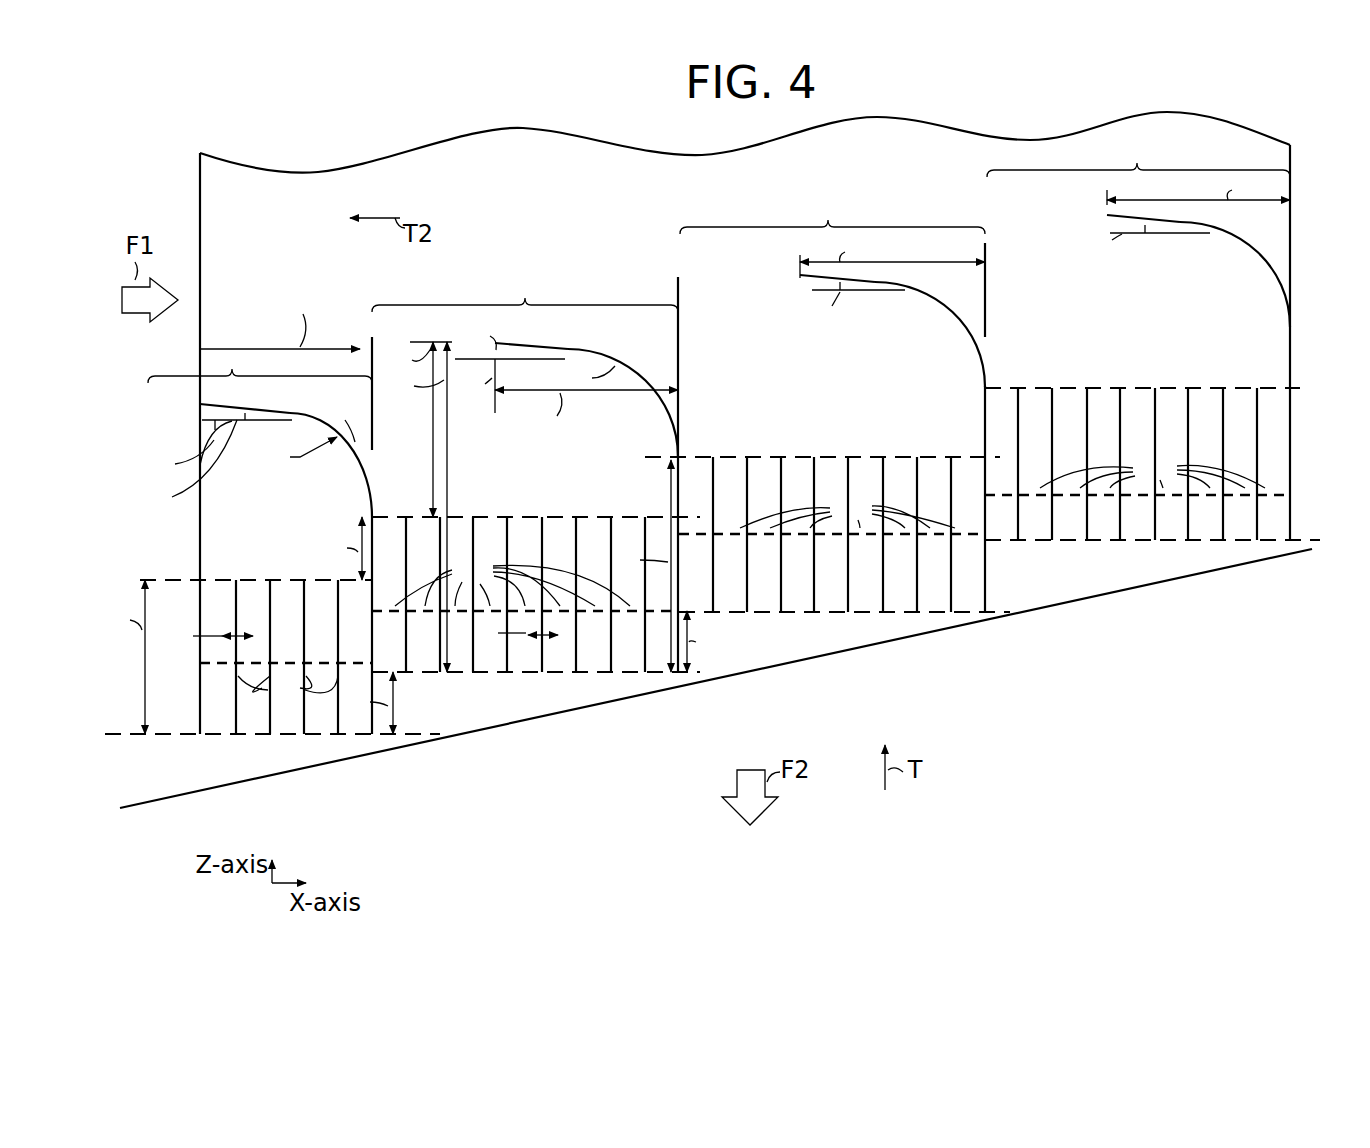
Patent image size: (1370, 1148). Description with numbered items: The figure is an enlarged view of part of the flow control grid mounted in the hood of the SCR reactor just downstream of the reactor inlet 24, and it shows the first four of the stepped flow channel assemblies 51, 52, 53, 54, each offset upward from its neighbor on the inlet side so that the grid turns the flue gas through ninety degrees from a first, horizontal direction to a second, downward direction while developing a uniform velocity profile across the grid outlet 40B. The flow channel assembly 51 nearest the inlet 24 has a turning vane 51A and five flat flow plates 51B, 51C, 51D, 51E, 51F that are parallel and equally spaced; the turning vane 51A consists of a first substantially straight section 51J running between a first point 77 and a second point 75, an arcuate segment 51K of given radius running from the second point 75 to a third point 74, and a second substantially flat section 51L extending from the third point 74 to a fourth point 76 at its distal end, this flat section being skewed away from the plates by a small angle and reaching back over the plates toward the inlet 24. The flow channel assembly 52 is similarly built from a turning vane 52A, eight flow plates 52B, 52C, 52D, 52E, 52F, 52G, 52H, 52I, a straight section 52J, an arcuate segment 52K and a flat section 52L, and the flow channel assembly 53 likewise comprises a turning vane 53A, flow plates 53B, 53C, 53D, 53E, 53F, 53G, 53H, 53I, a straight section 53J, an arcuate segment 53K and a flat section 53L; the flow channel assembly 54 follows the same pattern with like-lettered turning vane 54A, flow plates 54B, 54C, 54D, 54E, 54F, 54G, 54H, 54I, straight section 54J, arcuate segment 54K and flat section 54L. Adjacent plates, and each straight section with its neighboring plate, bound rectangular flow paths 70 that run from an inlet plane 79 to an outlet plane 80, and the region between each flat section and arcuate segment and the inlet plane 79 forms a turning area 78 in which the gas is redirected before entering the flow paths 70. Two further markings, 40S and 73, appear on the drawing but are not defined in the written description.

The inlet 24 is at (190, 166).
The surface 40S is at (190, 712).
The outlet 40B is at (550, 808).
The flow channel assembly 51 is at (232, 371).
The turning vane 51A is at (376, 470).
The flow plate 51B is at (338, 740).
The flow plate 51C is at (304, 740).
The flow plate 51D is at (272, 740).
The flow plate 51E is at (240, 740).
The flow plate 51F is at (205, 740).
The first substantially straight section 51J is at (376, 700).
The arcuate segment 51K is at (374, 438).
The second substantially flat section 51L is at (235, 406).
The flow channel assembly 52 is at (525, 299).
The turning vane 52A is at (681, 420).
The flow plate 52B is at (646, 676).
The flow plate 52C is at (612, 676).
The flow plate 52D is at (577, 676).
The flow plate 52E is at (543, 676).
The flow plate 52F is at (508, 676).
The flow plate 52G is at (475, 676).
The flow plate 52H is at (442, 676).
The flow plate 52I is at (408, 676).
The first substantially straight section 52J is at (681, 650).
The arcuate segment 52K is at (655, 368).
The second substantially flat section 52L is at (565, 350).
The flow channel assembly 53 is at (828, 221).
The turning vane 53A is at (993, 350).
The flow plate 53B is at (952, 616).
The flow plate 53C is at (918, 616).
The flow plate 53D is at (884, 616).
The flow plate 53E is at (849, 616).
The flow plate 53F is at (815, 616).
The flow plate 53G is at (783, 616).
The flow plate 53H is at (749, 616).
The flow plate 53I is at (715, 616).
The first substantially straight section 53J is at (990, 592).
The arcuate segment 53K is at (950, 304).
The second substantially flat section 53L is at (878, 284).
The flow channel assembly 54 is at (1137, 168).
The turning vane 54A is at (1274, 253).
The flow plate 54B is at (1258, 544).
The flow plate 54C is at (1224, 544).
The flow plate 54D is at (1189, 544).
The flow plate 54E is at (1156, 544).
The flow plate 54F is at (1121, 544).
The flow plate 54G is at (1088, 544).
The flow plate 54H is at (1053, 544).
The flow plate 54I is at (1019, 544).
The first substantially straight section 54J is at (1293, 440).
The arcuate segment 54K is at (1255, 240).
The second substantially flat section 54L is at (1180, 222).
The flow path 70 is at (350, 600).
The corner 73 is at (983, 386).
The third point 74 is at (302, 417).
The second point 75 is at (368, 515).
The fourth point 76 is at (198, 407).
The first point 77 is at (380, 750).
The turning area 78 is at (228, 506).
The inlet plane 79 is at (398, 515).
The outlet plane 80 is at (234, 738).